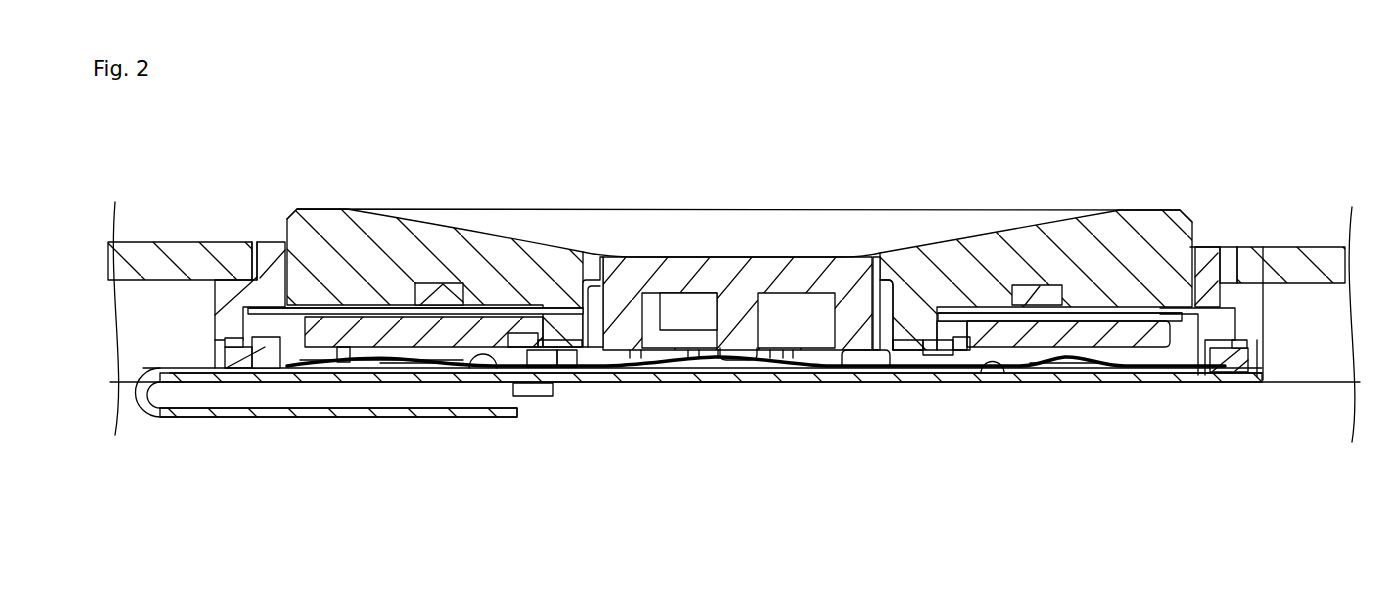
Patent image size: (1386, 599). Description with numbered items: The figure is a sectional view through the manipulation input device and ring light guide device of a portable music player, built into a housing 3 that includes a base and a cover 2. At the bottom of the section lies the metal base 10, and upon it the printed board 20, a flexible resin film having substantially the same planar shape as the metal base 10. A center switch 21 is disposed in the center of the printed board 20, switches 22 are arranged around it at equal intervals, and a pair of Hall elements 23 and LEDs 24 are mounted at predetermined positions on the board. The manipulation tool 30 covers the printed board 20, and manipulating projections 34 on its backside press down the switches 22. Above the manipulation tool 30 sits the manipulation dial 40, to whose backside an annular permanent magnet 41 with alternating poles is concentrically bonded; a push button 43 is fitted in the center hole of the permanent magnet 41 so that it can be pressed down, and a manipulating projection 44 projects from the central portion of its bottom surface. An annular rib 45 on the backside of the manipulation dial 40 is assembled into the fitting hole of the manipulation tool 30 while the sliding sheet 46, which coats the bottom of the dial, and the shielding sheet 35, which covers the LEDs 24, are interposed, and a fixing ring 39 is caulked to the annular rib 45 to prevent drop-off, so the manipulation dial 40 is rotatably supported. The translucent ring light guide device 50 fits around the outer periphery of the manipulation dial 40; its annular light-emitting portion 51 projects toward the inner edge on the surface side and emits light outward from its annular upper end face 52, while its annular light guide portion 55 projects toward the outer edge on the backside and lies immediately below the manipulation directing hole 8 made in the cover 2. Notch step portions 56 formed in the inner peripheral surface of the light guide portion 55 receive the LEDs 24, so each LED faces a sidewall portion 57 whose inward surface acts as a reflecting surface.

The cover 2 is at (145, 247).
The housing 3 is at (1267, 265).
The manipulation directing hole 8 is at (1252, 260).
The metal base 10 is at (850, 383).
The printed board 20 is at (162, 418).
The center switch 21 is at (712, 372).
The switch 22 is at (383, 368).
The Hall element 23 is at (482, 353).
The LED 24 is at (242, 370).
The manipulation tool 30 is at (317, 330).
The manipulating projection 34 is at (417, 373).
The shielding sheet 35 is at (1202, 316).
The fixing ring 39 is at (550, 384).
The manipulation dial 40 is at (1135, 230).
The permanent magnet 41 is at (441, 292).
The push button 43 is at (737, 267).
The manipulating projection 44 is at (740, 345).
The annular rib 45 is at (559, 305).
The sliding sheet 46 is at (973, 308).
The ring light guide device 50 is at (1237, 320).
The light-emitting portion 51 is at (250, 255).
The annular upper end face 52 is at (268, 241).
The light guide portion 55 is at (1230, 320).
The notch step portion 56 is at (238, 341).
The sidewall portion 57 is at (217, 358).